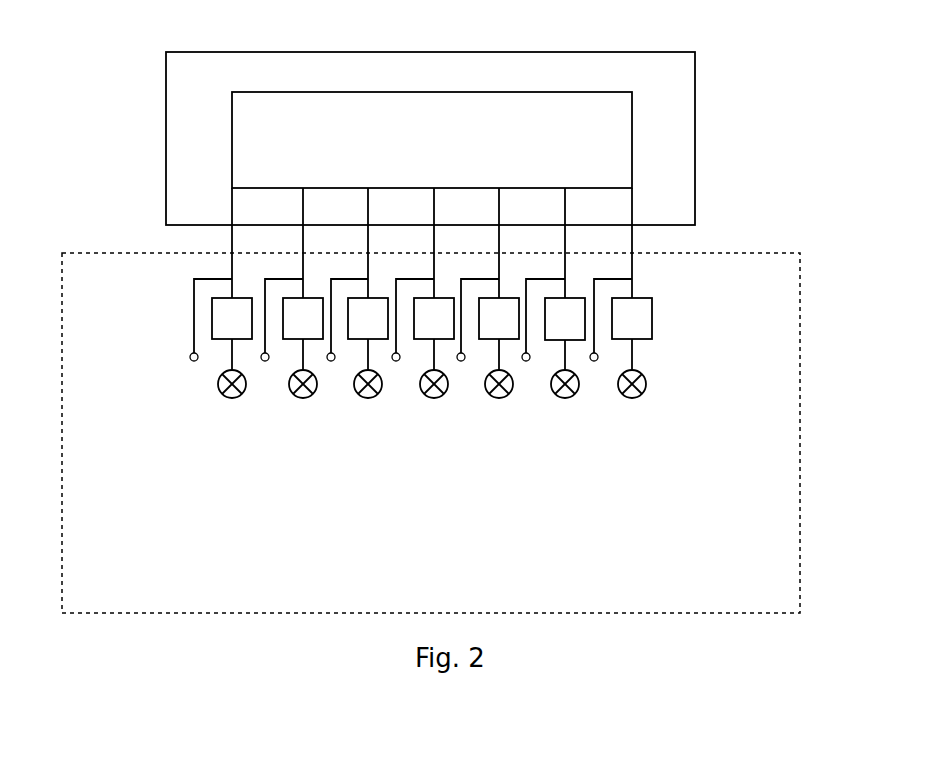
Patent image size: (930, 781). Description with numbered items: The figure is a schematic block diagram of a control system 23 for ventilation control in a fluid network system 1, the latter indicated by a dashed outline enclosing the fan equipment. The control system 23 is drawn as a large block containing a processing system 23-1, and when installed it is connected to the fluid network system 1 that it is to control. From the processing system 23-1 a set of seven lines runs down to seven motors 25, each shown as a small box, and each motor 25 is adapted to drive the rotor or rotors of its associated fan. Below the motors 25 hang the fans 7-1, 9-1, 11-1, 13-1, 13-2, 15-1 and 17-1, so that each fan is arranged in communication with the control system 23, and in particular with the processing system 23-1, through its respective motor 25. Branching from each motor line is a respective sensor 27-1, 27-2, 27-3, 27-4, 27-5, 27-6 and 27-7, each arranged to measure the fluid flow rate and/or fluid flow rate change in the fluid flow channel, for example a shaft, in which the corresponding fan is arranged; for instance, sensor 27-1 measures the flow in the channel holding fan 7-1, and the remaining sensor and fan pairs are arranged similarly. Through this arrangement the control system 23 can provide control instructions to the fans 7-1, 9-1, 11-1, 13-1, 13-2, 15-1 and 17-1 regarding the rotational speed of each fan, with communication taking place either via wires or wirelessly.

The fluid network system 1 is at (65, 370).
The control system 23 is at (610, 52).
The processing system 23-1 is at (455, 153).
The motor 25 is at (245, 328).
The sensor 27-1 is at (194, 361).
The sensor 27-2 is at (265, 361).
The sensor 27-3 is at (331, 361).
The sensor 27-4 is at (396, 361).
The sensor 27-5 is at (461, 361).
The sensor 27-6 is at (526, 361).
The sensor 27-7 is at (594, 361).
The fan 7-1 is at (231, 398).
The fan 9-1 is at (302, 398).
The fan 11-1 is at (367, 398).
The fan 13-1 is at (433, 398).
The fan 13-2 is at (498, 398).
The fan 15-1 is at (564, 398).
The fan 17-1 is at (631, 398).